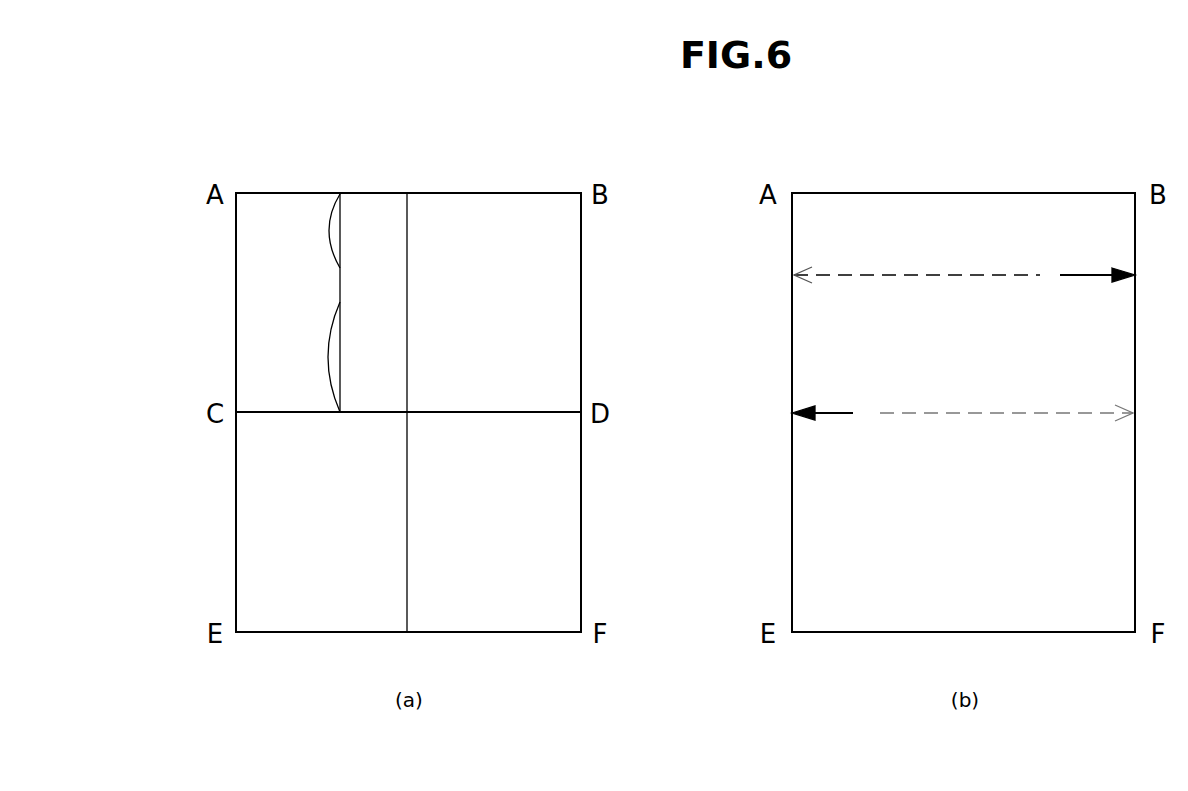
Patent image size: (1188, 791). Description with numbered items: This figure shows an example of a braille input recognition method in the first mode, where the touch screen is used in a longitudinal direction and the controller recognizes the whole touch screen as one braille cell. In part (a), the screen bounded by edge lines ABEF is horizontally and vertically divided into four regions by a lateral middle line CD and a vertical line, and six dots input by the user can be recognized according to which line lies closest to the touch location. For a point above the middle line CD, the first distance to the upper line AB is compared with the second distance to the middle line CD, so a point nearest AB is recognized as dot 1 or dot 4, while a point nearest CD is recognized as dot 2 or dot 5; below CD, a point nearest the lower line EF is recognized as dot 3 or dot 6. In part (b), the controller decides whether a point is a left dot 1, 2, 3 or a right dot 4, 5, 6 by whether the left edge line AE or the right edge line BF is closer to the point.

The dot 1 is at (680, 302).
The dot 2 is at (565, 439).
The dot 3 is at (575, 547).
The dot 4 is at (770, 292).
The dot 5 is at (806, 454).
The dot 6 is at (769, 548).